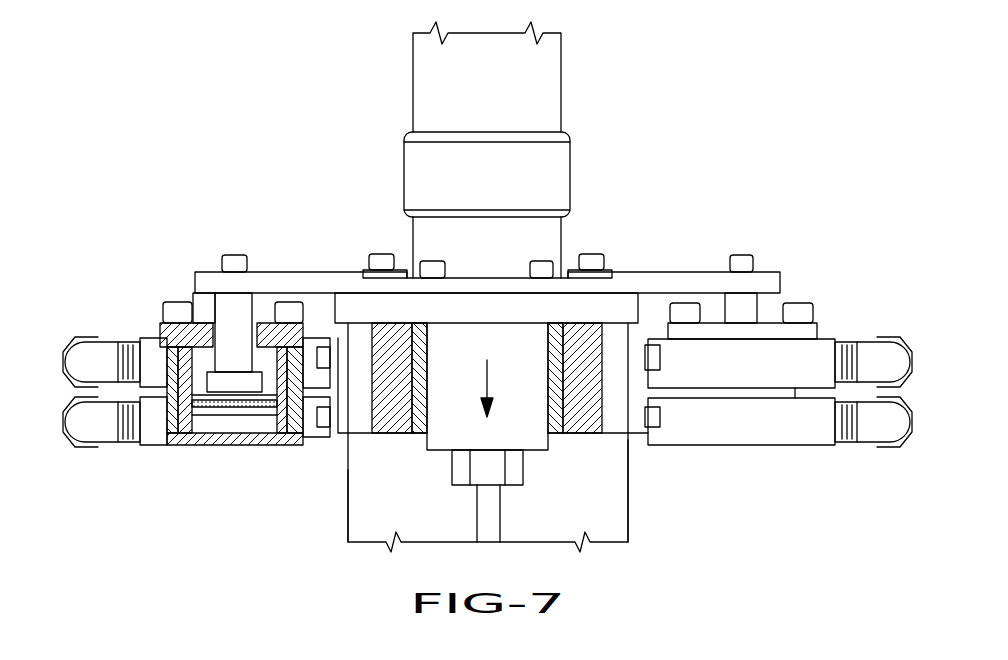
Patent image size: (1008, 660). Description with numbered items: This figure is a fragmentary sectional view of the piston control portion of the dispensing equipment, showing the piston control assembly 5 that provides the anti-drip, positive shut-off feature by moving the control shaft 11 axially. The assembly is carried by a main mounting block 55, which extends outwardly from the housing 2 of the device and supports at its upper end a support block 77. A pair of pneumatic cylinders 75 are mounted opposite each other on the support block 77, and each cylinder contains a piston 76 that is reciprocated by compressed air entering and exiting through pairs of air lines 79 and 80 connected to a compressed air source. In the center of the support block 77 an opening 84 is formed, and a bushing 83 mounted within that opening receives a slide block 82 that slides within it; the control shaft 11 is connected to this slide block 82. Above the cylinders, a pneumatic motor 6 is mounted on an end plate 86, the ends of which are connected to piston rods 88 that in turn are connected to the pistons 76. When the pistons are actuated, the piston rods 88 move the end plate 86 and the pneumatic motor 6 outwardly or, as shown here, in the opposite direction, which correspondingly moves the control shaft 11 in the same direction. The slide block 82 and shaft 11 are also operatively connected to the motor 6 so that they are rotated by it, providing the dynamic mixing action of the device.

The housing 2 is at (346, 507).
The piston control assembly 5 is at (641, 260).
The pneumatic motor 6 is at (552, 78).
The control shaft 11 is at (483, 519).
The main mounting block 55 is at (618, 517).
The pneumatic cylinders 75 is at (153, 443).
The piston 76 is at (228, 412).
The support block 77 is at (359, 424).
The air lines 79 is at (88, 358).
The air lines 80 is at (88, 427).
The slide block 82 is at (441, 441).
The bushing 83 is at (552, 404).
The opening 84 is at (556, 425).
The end plate 86 is at (331, 282).
The piston rods 88 is at (232, 306).